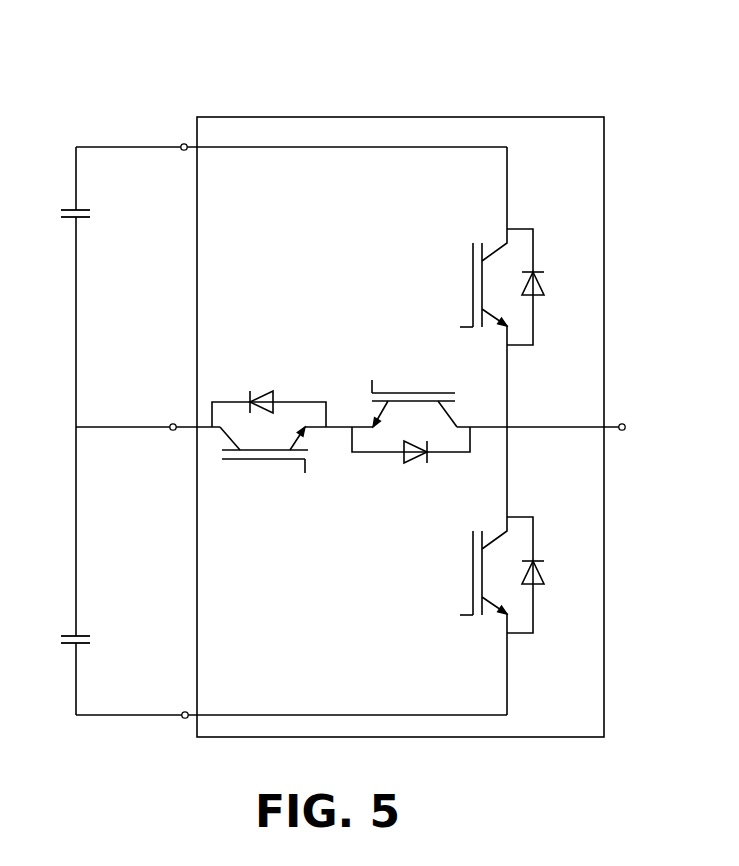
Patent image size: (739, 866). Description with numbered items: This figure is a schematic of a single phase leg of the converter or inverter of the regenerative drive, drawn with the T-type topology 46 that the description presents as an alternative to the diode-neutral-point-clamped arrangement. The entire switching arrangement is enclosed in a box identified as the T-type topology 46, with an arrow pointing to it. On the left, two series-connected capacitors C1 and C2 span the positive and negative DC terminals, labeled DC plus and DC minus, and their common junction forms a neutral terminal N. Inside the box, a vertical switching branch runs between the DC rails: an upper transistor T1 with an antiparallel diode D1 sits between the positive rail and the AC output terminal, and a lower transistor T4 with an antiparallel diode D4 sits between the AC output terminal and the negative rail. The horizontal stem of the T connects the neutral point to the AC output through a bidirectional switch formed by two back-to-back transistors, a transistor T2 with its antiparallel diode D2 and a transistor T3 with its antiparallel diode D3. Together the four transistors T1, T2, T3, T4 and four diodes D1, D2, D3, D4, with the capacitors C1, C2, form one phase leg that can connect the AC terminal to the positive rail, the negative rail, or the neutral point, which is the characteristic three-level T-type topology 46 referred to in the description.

The T-type topology 46 is at (564, 83).
The upper DC link capacitor C1 is at (92, 217).
The lower DC link capacitor C2 is at (93, 642).
The upper switching transistor T1 is at (471, 287).
The neutral clamp transistor T2 is at (264, 462).
The neutral clamp transistor T3 is at (414, 390).
The lower switching transistor T4 is at (471, 575).
The antiparallel diode of T1 D1 is at (546, 287).
The antiparallel diode of T2 D2 is at (269, 390).
The antiparallel diode of T3 D3 is at (411, 464).
The antiparallel diode of T4 D4 is at (546, 575).